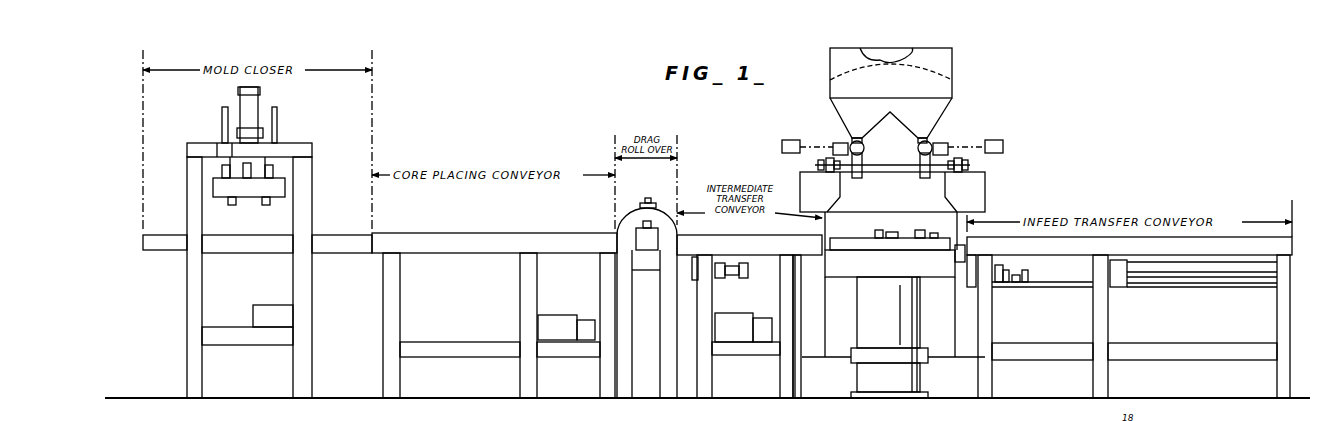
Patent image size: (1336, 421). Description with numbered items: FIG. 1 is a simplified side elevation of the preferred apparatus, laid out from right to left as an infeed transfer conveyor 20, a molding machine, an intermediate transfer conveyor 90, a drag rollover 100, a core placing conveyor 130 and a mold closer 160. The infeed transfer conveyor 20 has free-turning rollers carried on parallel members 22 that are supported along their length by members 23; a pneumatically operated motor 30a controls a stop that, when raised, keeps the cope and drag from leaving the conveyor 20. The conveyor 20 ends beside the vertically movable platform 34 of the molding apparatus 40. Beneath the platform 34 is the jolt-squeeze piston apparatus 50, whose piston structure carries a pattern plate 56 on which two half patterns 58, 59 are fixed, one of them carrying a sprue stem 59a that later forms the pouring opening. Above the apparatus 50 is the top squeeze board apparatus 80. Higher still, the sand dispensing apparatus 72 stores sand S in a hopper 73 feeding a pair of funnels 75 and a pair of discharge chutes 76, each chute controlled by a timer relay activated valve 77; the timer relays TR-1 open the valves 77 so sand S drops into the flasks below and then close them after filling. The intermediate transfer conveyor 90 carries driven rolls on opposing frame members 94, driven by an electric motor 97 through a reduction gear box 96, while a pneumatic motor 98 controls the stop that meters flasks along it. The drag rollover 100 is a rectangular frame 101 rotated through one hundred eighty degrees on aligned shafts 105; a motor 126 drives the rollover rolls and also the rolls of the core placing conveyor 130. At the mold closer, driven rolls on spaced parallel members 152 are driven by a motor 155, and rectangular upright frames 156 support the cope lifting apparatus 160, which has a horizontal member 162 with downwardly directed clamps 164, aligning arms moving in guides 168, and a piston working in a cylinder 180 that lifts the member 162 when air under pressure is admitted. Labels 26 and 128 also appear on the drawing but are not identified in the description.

The infeed transfer conveyor 20 is at (1195, 210).
The parallel members 22 is at (1068, 243).
The support members 23 is at (1095, 376).
The conveyor rails 26 is at (1223, 270).
The pneumatically operated motor 30a is at (1013, 284).
The vertically movable platform 34 is at (882, 276).
The molding apparatus 40 is at (990, 172).
The jolt-squeeze piston apparatus 50 is at (888, 305).
The pattern plate 56 is at (942, 245).
The half pattern 58 is at (938, 238).
The half pattern 59 is at (912, 228).
The sprue stem 59a is at (875, 236).
The sand dispensing apparatus 72 is at (970, 48).
The hopper 73 is at (891, 80).
The sand S is at (875, 62).
The funnel 75 is at (840, 116).
The discharge chute 76 is at (916, 150).
The timer relay activated valve 77 is at (840, 143).
The timer relay TR-1 is at (782, 147).
The top squeeze board apparatus 80 is at (900, 203).
The intermediate transfer conveyor 90 is at (766, 237).
The frame members 94 is at (689, 246).
The reduction gear box 96 is at (762, 324).
The electric motor 97 is at (734, 327).
The pneumatic motor 98 is at (733, 278).
The drag rollover station 100 is at (648, 201).
The rectangular frame 101 is at (633, 218).
The shaft 105 is at (650, 244).
The motor 126 is at (552, 315).
The switch 128 is at (587, 320).
The core placing conveyor 130 is at (515, 222).
The spaced parallel members 152 is at (155, 248).
The motor 155 is at (262, 305).
The rectangular upright frames 156 is at (190, 303).
The cope lifting apparatus 160 is at (280, 148).
The horizontal member 162 is at (228, 197).
The downwardly-directed clamps 164 is at (280, 197).
The guides 168 is at (222, 113).
The cylinder 180 is at (238, 100).